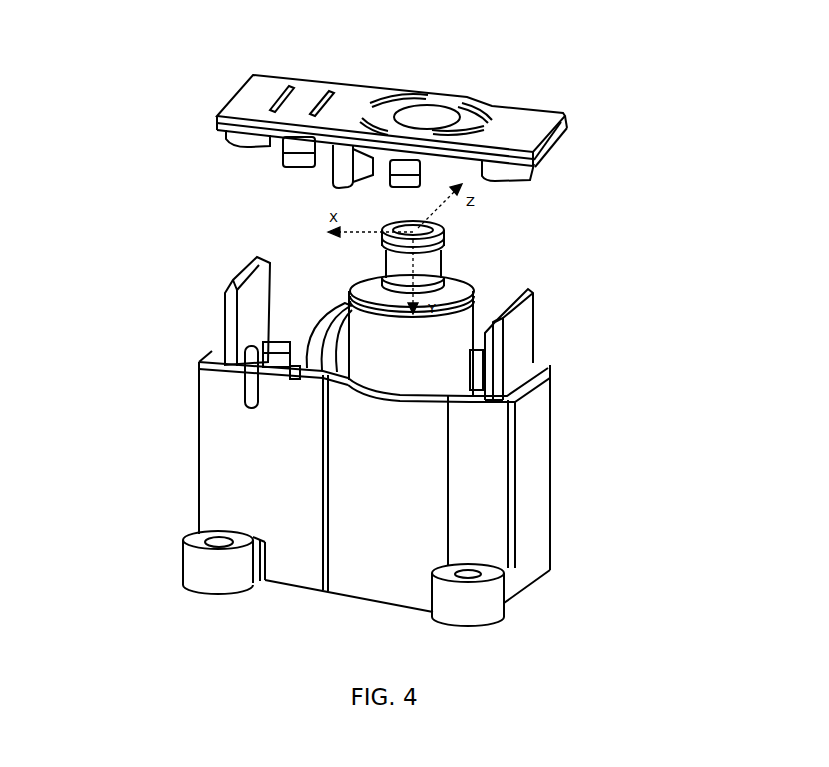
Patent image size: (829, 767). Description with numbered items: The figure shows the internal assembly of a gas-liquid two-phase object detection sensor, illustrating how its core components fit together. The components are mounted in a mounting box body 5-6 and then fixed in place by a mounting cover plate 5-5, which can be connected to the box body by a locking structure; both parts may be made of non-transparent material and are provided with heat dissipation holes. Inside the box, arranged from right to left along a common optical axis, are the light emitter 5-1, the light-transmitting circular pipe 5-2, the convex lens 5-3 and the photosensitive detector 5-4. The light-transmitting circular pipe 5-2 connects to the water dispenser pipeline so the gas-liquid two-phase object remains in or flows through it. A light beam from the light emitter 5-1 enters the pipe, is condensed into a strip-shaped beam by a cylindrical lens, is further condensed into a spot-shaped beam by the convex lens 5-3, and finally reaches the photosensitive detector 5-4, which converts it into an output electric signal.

The mounting cover plate 5-5 is at (545, 130).
The light-transmitting circular pipe 5-2 is at (474, 310).
The convex lens 5-3 is at (313, 340).
The photosensitive detector 5-4 is at (228, 352).
The light emitter 5-1 is at (520, 333).
The mounting box body 5-6 is at (532, 522).